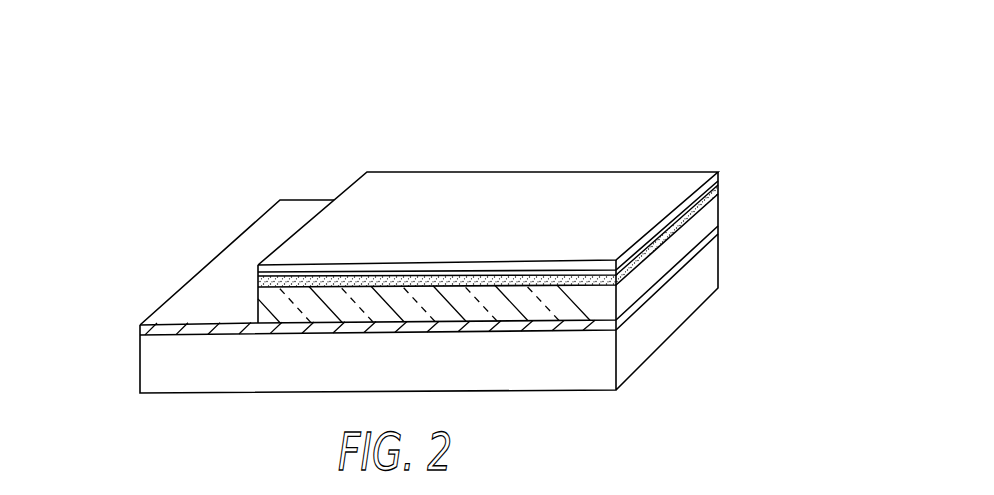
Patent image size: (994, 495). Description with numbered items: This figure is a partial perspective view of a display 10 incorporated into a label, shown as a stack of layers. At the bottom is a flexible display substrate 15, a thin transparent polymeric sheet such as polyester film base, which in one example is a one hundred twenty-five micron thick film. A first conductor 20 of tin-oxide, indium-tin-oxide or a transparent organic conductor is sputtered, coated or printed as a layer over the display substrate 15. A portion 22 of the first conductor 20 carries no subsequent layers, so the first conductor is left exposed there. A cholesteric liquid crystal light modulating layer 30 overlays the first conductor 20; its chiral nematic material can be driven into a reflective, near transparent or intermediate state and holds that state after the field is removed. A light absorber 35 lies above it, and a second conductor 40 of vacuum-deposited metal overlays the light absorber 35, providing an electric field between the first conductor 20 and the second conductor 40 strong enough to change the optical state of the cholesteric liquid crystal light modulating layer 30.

The display 10 is at (374, 138).
The flexible display substrate 15 is at (147, 372).
The first conductor 20 is at (652, 293).
The portion of first conductor 22 is at (191, 296).
The cholesteric liquid crystal light modulating layer 30 is at (718, 215).
The light absorber 35 is at (718, 188).
The second conductor 40 is at (613, 185).